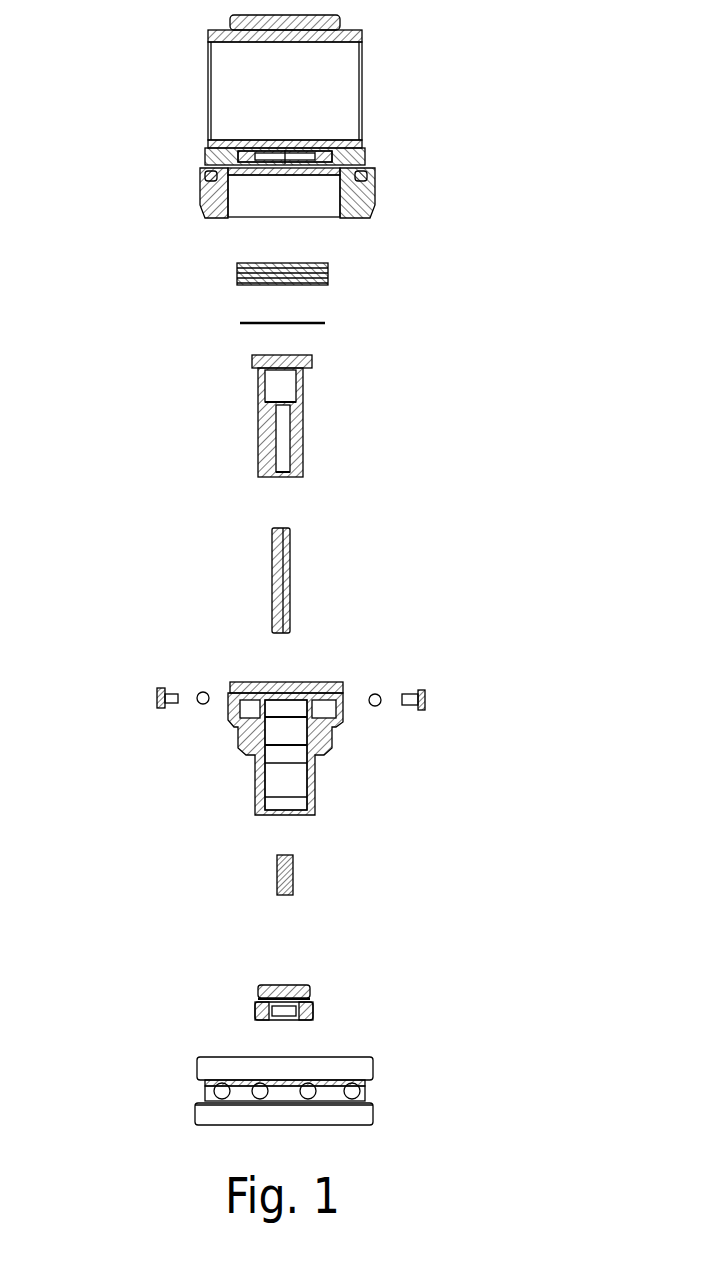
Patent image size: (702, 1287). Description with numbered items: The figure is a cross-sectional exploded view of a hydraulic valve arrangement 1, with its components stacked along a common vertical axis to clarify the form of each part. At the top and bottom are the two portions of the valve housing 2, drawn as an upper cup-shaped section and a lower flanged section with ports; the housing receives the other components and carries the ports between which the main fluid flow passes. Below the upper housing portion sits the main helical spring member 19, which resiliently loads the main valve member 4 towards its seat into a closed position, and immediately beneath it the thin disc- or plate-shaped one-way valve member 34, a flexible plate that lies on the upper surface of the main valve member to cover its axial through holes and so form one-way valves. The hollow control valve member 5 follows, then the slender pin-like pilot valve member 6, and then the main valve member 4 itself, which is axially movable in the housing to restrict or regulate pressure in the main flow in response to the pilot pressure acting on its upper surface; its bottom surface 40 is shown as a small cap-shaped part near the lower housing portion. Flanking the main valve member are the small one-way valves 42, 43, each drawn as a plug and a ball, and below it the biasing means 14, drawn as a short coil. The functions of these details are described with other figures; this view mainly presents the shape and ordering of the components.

The valve arrangement 1 is at (512, 193).
The valve housing 2 is at (215, 188).
The main helical spring member 19 is at (237, 281).
The one-way valve member 34 is at (315, 322).
The control valve member 5 is at (260, 430).
The pilot valve member 6 is at (287, 591).
The main valve member 4 is at (255, 738).
The one-way valve 42 is at (182, 683).
The one-way valve 43 is at (395, 683).
The biasing means 14 is at (284, 897).
The bottom surface 40 is at (307, 1018).